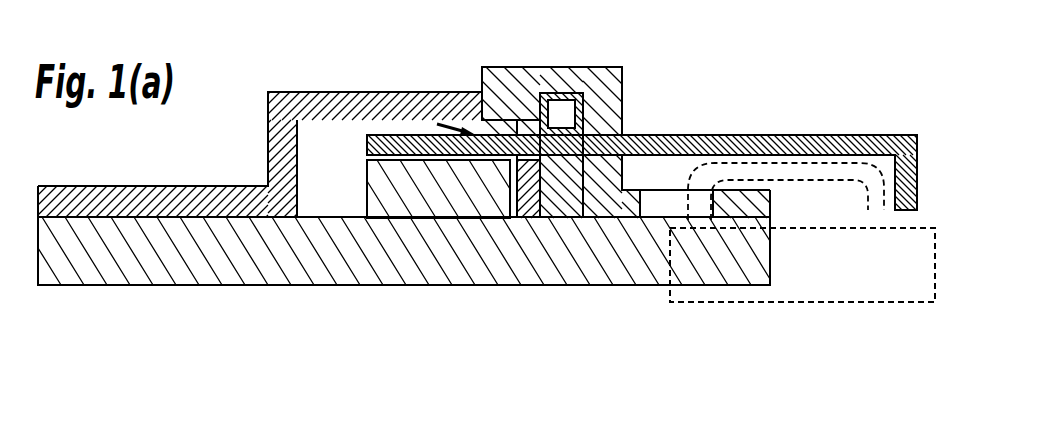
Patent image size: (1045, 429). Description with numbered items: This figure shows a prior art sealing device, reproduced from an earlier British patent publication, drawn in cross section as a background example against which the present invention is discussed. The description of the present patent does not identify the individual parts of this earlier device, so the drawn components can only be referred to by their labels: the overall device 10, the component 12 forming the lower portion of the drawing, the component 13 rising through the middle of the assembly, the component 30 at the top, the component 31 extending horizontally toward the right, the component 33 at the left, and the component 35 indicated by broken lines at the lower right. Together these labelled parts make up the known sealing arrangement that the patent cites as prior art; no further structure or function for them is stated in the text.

The semiconductor device 10 is at (294, 66).
The base substrate 12 is at (443, 260).
The terminal pin 13 is at (558, 210).
The cover block 30 is at (512, 90).
The lead plate 31 is at (696, 137).
The housing cavity 33 is at (330, 203).
The external circuit region 35 is at (858, 292).